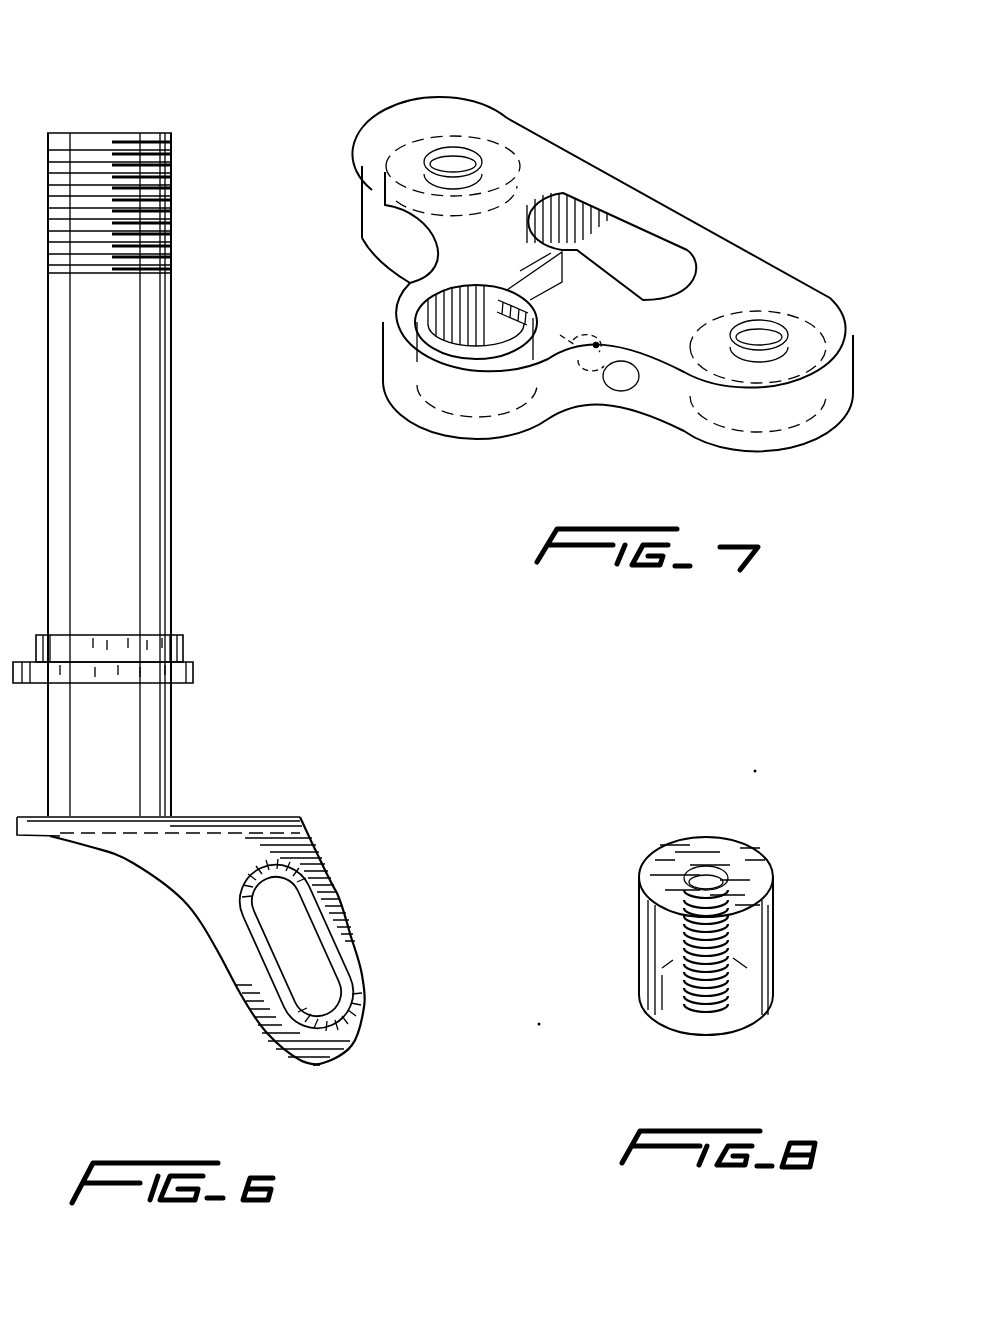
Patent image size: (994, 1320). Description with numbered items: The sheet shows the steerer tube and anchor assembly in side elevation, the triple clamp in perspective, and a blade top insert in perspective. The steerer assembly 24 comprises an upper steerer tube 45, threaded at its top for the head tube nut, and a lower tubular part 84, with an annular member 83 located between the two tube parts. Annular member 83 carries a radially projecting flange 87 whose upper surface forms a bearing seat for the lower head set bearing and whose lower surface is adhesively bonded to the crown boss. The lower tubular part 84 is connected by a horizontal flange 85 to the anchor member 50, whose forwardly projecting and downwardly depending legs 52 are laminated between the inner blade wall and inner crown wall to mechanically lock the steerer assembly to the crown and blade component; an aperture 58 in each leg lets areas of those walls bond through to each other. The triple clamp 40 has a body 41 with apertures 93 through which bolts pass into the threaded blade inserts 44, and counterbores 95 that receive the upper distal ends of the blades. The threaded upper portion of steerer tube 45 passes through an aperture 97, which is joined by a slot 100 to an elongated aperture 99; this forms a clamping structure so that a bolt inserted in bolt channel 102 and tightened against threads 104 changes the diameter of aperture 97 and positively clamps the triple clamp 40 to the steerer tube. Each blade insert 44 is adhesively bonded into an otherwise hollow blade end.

In FIG. 6, the steerer tube 45 is at (172, 521).
In FIG. 6, the steerer assembly 24 is at (192, 582).
In FIG. 6, the annular member 83 is at (183, 651).
In FIG. 6, the radially projecting flange 87 is at (195, 672).
In FIG. 6, the lower tubular part 84 is at (171, 753).
In FIG. 6, the horizontal flange 85 is at (237, 817).
In FIG. 6, the anchor member 50 is at (234, 910).
In FIG. 6, the aperture 58 is at (296, 938).
In FIG. 6, the leg 52 is at (362, 983).
In FIG. 7, the aperture 93 is at (480, 160).
In FIG. 7, the elongated aperture 99 is at (633, 235).
In FIG. 7, the triple clamp 40 is at (594, 283).
In FIG. 7, the triple clamp body 41 is at (762, 257).
In FIG. 7, the counterbore 95 is at (385, 256).
In FIG. 7, the threads 104 is at (496, 312).
In FIG. 7, the aperture 97 is at (417, 302).
In FIG. 7, the slot 100 is at (552, 288).
In FIG. 7, the bolt channel 102 is at (620, 380).
In FIG. 8, the blade insert 44 is at (772, 948).